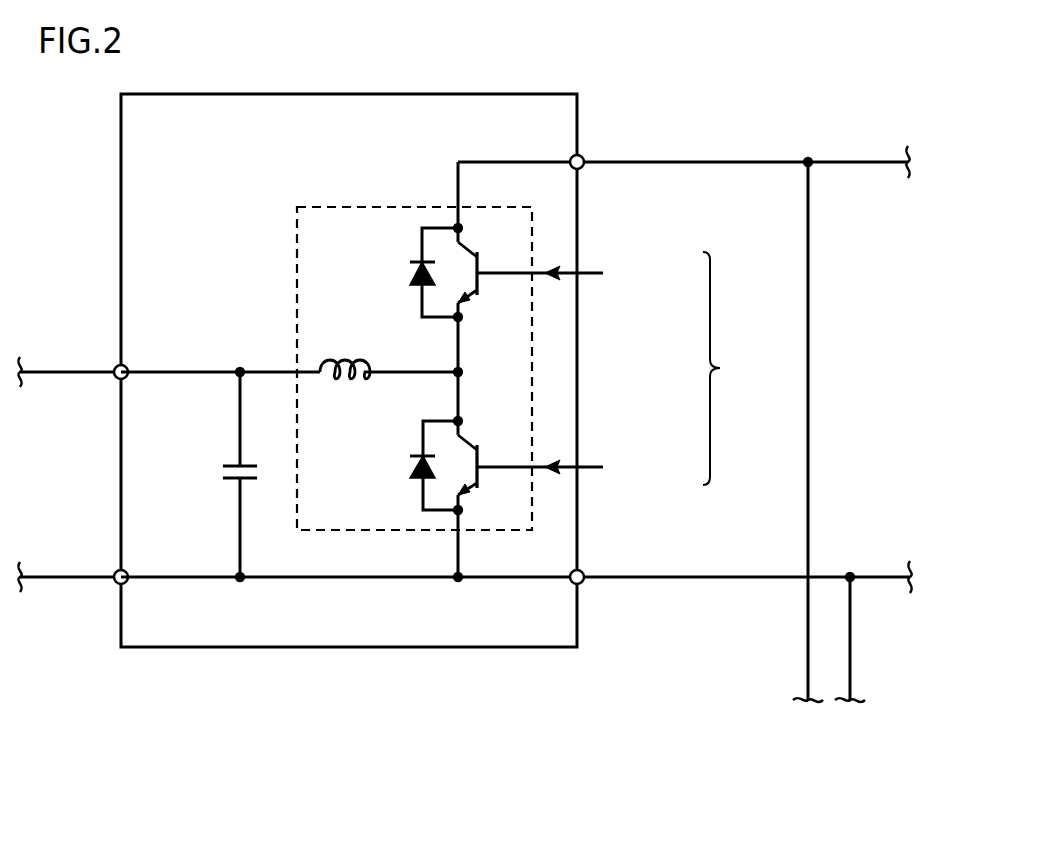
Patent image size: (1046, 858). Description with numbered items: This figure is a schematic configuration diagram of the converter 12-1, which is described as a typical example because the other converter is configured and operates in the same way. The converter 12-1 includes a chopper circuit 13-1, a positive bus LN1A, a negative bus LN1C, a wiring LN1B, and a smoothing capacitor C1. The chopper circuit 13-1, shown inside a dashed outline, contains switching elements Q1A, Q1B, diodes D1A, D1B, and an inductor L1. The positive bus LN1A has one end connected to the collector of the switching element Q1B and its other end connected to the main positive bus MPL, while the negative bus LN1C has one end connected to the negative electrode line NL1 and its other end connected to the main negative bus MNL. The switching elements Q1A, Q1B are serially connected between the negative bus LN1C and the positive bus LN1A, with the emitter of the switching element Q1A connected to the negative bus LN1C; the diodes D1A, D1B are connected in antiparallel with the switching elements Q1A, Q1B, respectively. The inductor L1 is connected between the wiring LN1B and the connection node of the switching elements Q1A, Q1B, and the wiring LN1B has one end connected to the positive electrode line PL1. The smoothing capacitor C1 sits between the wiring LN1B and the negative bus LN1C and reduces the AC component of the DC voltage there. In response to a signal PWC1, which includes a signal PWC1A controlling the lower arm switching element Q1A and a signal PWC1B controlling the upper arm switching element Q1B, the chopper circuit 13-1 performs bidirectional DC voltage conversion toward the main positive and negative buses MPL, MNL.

The converter 12-1 is at (545, 94).
The chopper circuit 13-1 is at (333, 206).
The positive bus LN1A is at (683, 187).
The wiring LN1B is at (292, 360).
The negative bus LN1C is at (515, 565).
The positive electrode line PL1 is at (55, 371).
The negative electrode line NL1 is at (58, 576).
The main positive bus MPL is at (884, 160).
The main negative bus MNL is at (884, 576).
The inductor L1 is at (350, 354).
The smoothing capacitor C1 is at (232, 465).
The switching element Q1A is at (486, 466).
The switching element Q1B is at (486, 273).
The diode D1A is at (412, 463).
The diode D1B is at (411, 270).
The signal PWC1 is at (745, 368).
The signal PWC1A is at (586, 470).
The signal PWC1B is at (586, 275).